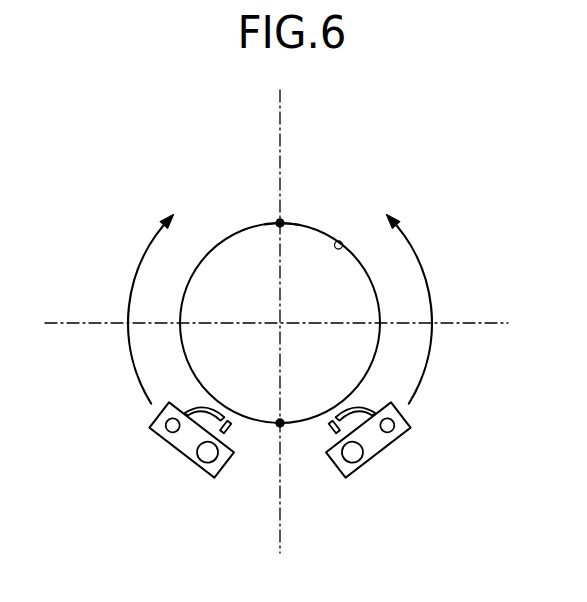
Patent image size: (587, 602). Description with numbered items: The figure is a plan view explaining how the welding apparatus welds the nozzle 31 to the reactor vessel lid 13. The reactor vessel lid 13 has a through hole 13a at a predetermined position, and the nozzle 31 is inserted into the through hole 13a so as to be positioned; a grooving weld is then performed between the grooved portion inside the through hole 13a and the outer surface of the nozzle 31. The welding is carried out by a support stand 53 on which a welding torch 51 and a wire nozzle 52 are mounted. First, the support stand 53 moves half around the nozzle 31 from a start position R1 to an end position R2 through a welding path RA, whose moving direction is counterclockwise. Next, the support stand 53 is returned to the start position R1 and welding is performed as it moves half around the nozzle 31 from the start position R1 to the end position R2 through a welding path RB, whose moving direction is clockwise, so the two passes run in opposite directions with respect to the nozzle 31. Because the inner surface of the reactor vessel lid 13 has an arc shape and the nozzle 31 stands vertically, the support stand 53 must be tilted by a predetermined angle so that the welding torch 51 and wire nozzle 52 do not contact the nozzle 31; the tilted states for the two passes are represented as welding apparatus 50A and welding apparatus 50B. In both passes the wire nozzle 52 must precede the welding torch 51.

The reactor vessel lid 13 is at (521, 108).
The through hole 13a is at (349, 241).
The nozzle 31 is at (302, 225).
The start position R1 is at (280, 424).
The end position R2 is at (279, 222).
The welding path RA is at (424, 272).
The welding path RB is at (136, 272).
The welding apparatus 50A is at (410, 428).
The welding apparatus 50B is at (150, 428).
The welding torch 51 is at (204, 456).
The wire nozzle 52 is at (168, 430).
The support stand 53 is at (168, 443).